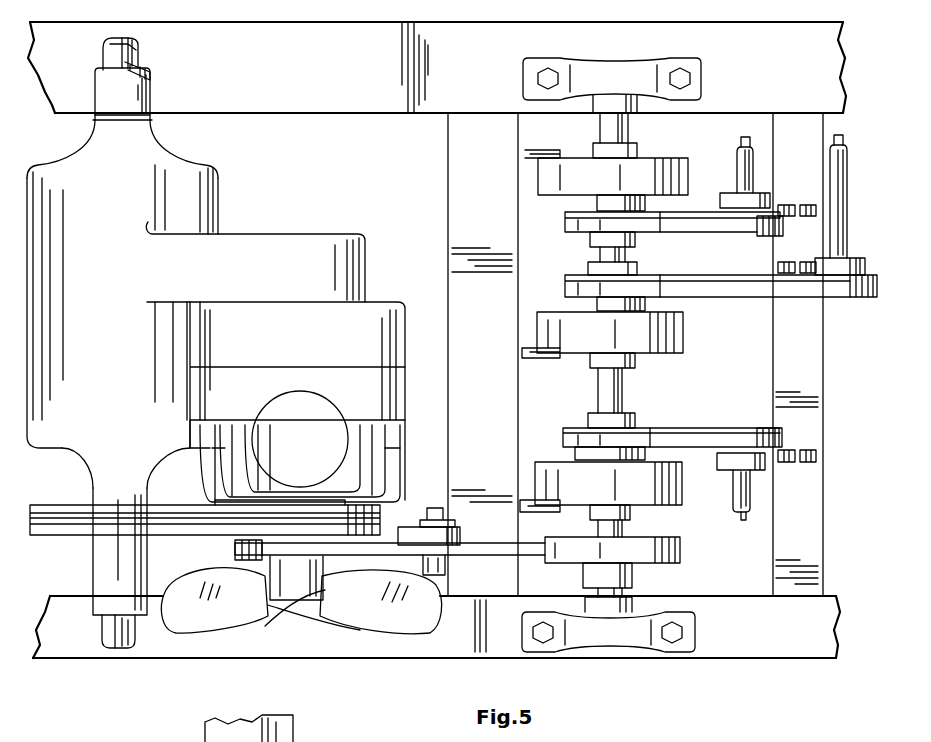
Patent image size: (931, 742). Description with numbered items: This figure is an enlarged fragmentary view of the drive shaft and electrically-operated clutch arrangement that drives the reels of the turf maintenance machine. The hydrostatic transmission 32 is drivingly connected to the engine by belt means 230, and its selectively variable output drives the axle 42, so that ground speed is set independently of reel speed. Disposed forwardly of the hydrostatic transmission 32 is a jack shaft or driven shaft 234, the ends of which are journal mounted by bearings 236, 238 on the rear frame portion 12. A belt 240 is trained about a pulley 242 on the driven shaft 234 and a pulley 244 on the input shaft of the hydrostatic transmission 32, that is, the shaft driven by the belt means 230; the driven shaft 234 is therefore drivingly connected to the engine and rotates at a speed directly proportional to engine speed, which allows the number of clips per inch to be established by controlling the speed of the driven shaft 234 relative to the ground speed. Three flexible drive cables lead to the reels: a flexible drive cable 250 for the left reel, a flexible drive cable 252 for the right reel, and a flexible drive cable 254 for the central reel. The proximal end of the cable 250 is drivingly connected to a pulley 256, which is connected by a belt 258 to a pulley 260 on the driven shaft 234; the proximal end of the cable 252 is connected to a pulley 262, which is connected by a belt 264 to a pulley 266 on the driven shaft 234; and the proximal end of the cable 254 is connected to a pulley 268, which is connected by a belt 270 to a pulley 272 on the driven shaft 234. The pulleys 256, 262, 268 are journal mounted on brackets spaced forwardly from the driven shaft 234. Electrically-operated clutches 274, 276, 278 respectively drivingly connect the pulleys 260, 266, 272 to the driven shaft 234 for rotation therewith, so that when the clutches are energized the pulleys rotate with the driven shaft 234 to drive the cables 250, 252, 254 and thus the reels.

The rear frame portion 12 is at (325, 87).
The hydrostatic transmission 32 is at (376, 398).
The axle 42 is at (118, 62).
The belt means 230 is at (58, 512).
The driven shaft 234 is at (620, 388).
The bearing 236 is at (614, 74).
The bearing 238 is at (618, 638).
The belt 240 is at (477, 555).
The pulley 242 is at (672, 522).
The pulley 244 is at (245, 557).
The flexible drive cable 250 is at (740, 515).
The flexible drive cable 252 is at (745, 172).
The flexible drive cable 254 is at (848, 178).
The pulley 256 is at (743, 430).
The belt 258 is at (675, 436).
The pulley 260 is at (574, 428).
The pulley 262 is at (745, 238).
The belt 264 is at (683, 232).
The pulley 266 is at (580, 232).
The pulley 268 is at (845, 300).
The belt 270 is at (733, 293).
The pulley 272 is at (568, 298).
The electrically-operated clutch 274 is at (677, 490).
The electrically-operated clutch 276 is at (639, 170).
The electrically-operated clutch 278 is at (684, 345).